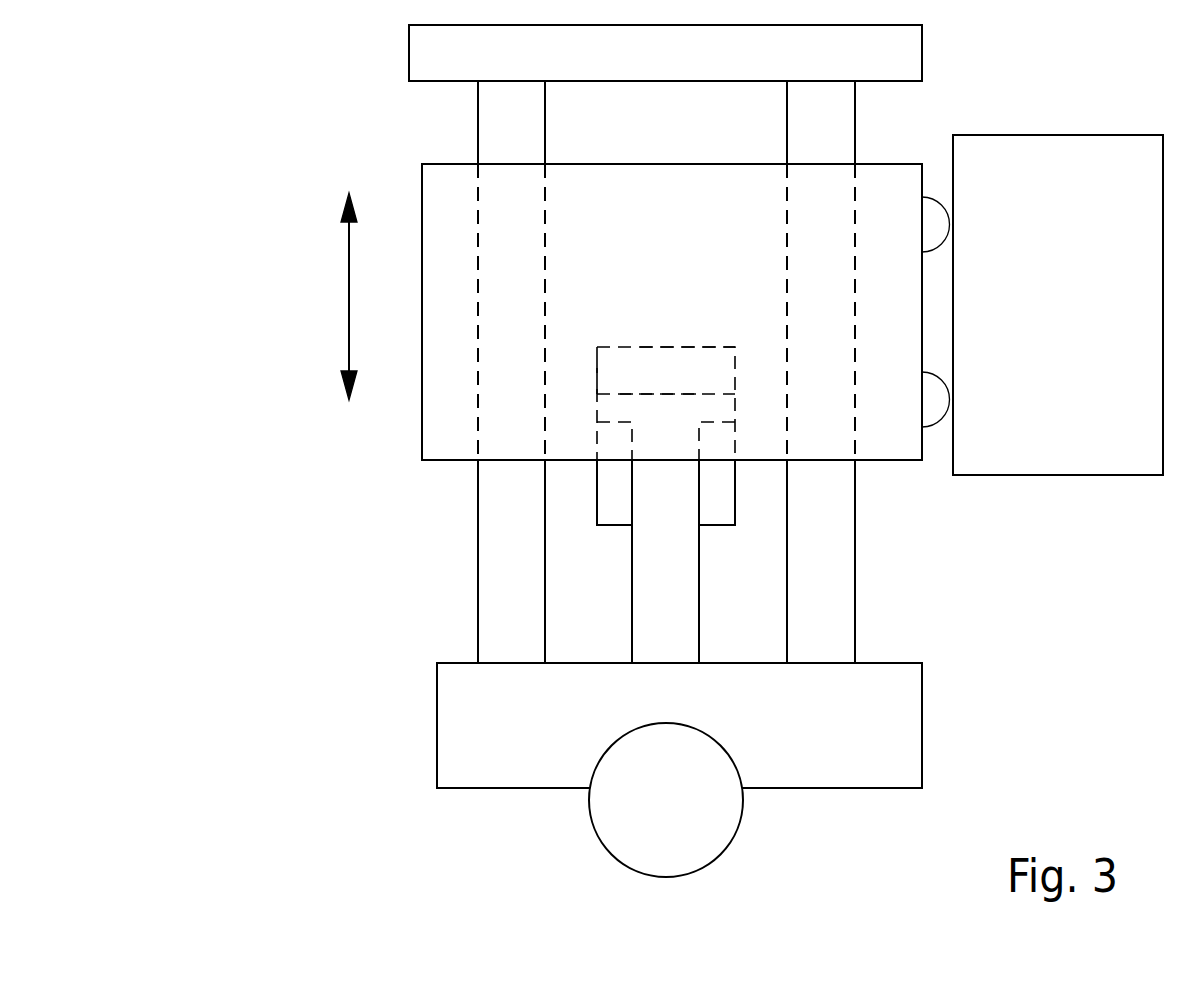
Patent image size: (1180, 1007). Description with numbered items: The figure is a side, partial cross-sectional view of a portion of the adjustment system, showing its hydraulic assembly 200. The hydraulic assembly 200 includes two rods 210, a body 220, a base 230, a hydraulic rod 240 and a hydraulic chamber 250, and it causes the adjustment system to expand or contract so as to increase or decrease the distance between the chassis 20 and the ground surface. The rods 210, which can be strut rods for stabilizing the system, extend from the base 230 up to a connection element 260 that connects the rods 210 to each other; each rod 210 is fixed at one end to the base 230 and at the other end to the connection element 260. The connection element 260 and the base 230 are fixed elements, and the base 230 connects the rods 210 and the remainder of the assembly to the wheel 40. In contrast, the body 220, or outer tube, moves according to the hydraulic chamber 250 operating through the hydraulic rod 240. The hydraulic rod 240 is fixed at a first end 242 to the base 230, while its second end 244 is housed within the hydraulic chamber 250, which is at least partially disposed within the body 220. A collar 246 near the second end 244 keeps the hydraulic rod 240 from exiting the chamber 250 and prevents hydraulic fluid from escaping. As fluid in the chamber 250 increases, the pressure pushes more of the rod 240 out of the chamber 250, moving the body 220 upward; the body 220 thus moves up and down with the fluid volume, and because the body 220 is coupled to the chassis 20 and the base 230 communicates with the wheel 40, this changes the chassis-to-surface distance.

The chassis 20 is at (1073, 318).
The wheel 40 is at (683, 816).
The hydraulic assembly 200 is at (283, 131).
The rods 210 is at (510, 116).
The body 220 is at (440, 429).
The base 230 is at (458, 703).
The hydraulic rod 240 is at (672, 537).
The first end 242 is at (632, 661).
The second end 244 is at (607, 392).
The collar 246 is at (660, 413).
The hydraulic chamber 250 is at (693, 365).
The connection element 260 is at (428, 45).